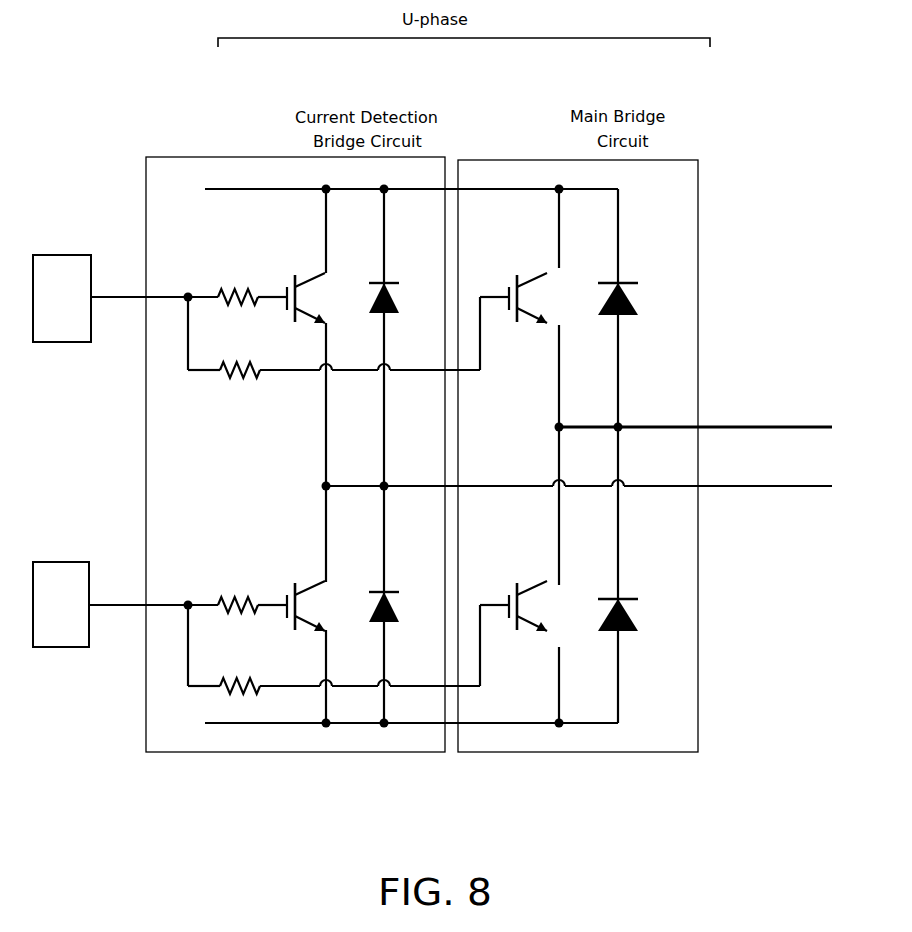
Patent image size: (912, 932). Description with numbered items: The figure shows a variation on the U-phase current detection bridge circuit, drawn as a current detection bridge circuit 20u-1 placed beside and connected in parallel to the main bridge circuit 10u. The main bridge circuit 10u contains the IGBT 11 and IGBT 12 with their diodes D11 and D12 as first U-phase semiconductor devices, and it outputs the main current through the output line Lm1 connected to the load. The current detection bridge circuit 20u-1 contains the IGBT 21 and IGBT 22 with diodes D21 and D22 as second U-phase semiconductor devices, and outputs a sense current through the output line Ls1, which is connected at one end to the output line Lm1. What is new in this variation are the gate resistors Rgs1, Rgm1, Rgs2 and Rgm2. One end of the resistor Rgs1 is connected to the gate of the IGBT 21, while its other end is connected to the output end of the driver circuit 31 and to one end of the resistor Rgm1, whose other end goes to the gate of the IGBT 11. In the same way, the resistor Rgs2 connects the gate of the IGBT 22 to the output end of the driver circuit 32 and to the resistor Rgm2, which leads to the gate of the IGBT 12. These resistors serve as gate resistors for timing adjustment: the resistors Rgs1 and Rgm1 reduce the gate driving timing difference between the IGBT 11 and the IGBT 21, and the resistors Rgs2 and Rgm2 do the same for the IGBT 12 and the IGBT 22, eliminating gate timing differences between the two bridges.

The current detection bridge circuit 20u-1 is at (257, 132).
The main bridge circuit 10u is at (483, 160).
The driver circuit 31 is at (53, 253).
The driver circuit 32 is at (52, 560).
The IGBT 21 is at (306, 284).
The IGBT 22 is at (306, 591).
The IGBT 11 is at (528, 282).
The IGBT 12 is at (528, 593).
The diode D21 is at (364, 280).
The diode D22 is at (364, 592).
The diode D11 is at (602, 284).
The diode D12 is at (602, 598).
The resistor Rgs1 is at (189, 280).
The resistor Rgs2 is at (188, 588).
The resistor Rgm1 is at (348, 355).
The resistor Rgm2 is at (348, 649).
The output line Lm1 is at (763, 427).
The output line Ls1 is at (767, 488).